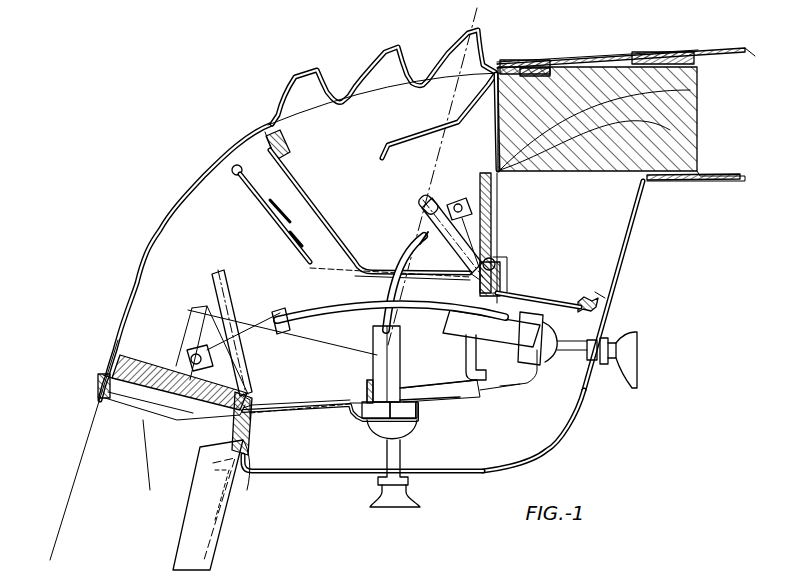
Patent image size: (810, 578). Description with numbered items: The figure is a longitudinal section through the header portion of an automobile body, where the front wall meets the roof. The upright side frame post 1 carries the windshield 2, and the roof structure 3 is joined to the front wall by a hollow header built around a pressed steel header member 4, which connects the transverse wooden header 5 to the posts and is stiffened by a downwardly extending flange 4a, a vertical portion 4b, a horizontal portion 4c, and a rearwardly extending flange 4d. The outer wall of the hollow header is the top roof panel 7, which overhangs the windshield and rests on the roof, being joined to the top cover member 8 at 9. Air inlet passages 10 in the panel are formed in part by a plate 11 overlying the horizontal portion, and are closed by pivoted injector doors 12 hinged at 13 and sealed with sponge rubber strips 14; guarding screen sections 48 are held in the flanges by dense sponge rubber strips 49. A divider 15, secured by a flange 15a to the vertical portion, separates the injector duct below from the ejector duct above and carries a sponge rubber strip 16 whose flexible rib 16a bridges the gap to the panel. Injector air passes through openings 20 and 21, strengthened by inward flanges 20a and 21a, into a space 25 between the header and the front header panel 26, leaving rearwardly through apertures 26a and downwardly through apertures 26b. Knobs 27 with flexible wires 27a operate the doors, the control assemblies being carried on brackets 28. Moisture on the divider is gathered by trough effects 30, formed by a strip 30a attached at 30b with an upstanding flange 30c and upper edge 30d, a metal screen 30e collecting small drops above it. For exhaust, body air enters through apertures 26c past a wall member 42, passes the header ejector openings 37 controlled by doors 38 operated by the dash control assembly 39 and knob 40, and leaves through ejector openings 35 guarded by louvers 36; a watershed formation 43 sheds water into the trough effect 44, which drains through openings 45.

The side frame post 1 is at (72, 470).
The windshield 2 is at (477, 28).
The roof structure 3 is at (676, 52).
The header member 4 is at (495, 142).
The downwardly extending flange 4a is at (240, 490).
The vertical portion 4b is at (503, 280).
The horizontal portion 4c is at (345, 412).
The rearwardly extending flange 4d is at (528, 63).
The wooden header member 5 is at (573, 67).
The outer header member 7 is at (205, 172).
The top cover member 8 is at (745, 58).
The joint 9 is at (640, 52).
The air inlet passages 10 is at (135, 402).
The plate 11 is at (300, 402).
The injector control doors 12 is at (250, 280).
The hinge 13 is at (250, 397).
The sponge rubber strips 14 is at (196, 410).
The divider 15 is at (380, 275).
The flange 15a is at (497, 266).
The sponge rubber strip 16 is at (278, 147).
The flexible rib 16a is at (265, 132).
The air passage opening 20 is at (493, 312).
The inward flange 20a is at (480, 360).
The air passage opening 21 is at (422, 386).
The inward flange 21a is at (360, 372).
The space 25 is at (499, 407).
The front header panel 26 is at (610, 315).
The apertures 26a is at (590, 405).
The apertures 26b is at (480, 478).
The apertures 26c is at (630, 240).
The knobs 27 is at (625, 358).
The flexible rods or wires 27a is at (272, 318).
The brackets 28 is at (545, 383).
The trough effects 30 is at (320, 233).
The sheet metal strip 30a is at (386, 289).
The attachment point 30b is at (409, 294).
The upstanding flange 30c is at (236, 176).
The upper trough edge 30d is at (292, 238).
The metal screen 30e is at (275, 212).
The ejector openings 35 is at (318, 88).
The louvers 36 is at (300, 73).
The ejector openings 37 is at (503, 213).
The ejector doors 38 is at (472, 203).
The dash control assembly 39 is at (402, 342).
The control knob 40 is at (392, 503).
The wall member 42 is at (563, 300).
The watershed formation 43 is at (432, 127).
The trough effect 44 is at (410, 270).
The drain openings 45 is at (472, 286).
The guarding screen sections 48 is at (138, 442).
The sponge rubber strips 49 is at (96, 390).